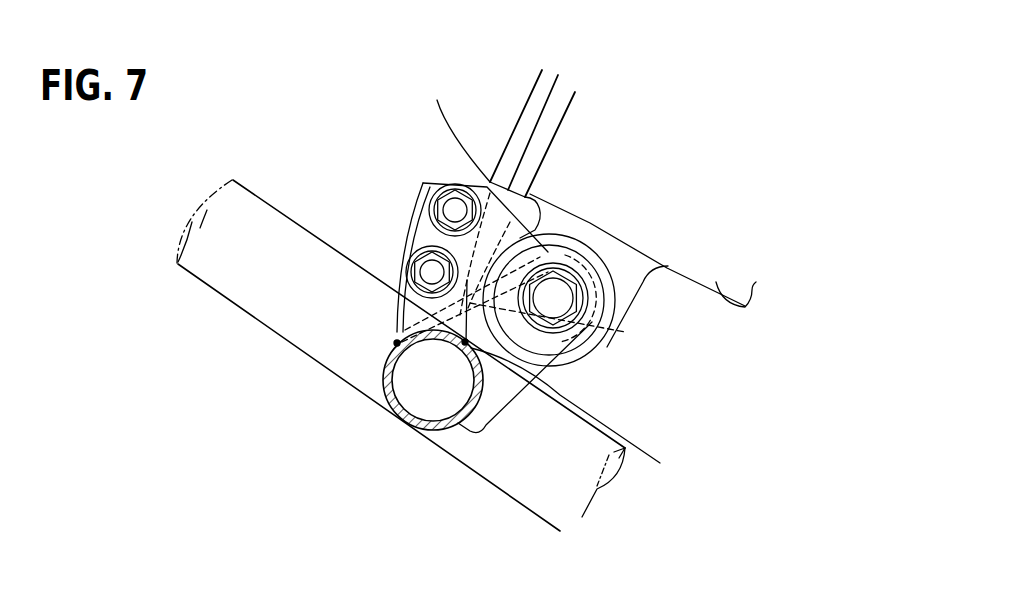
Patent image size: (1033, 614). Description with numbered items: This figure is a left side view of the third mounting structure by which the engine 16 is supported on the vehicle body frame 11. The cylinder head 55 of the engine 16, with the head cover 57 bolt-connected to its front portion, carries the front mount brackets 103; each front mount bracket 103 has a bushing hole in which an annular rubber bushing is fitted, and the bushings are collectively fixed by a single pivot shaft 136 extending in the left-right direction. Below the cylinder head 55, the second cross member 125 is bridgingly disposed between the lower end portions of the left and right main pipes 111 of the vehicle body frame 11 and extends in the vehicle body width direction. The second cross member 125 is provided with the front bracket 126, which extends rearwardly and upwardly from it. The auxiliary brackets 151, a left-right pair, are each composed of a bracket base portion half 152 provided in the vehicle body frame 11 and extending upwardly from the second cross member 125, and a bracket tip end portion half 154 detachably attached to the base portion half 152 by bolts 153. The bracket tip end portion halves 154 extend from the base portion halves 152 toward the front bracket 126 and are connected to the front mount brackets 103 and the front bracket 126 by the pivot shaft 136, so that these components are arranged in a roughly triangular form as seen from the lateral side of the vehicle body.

The engine 16 is at (493, 60).
The head cover 57 is at (448, 100).
The bolts 153 is at (432, 268).
The auxiliary brackets 151 is at (356, 318).
The bracket tip end portion halves 154 is at (397, 247).
The bracket base portion halves 152 is at (393, 323).
The cylinder head 55 is at (743, 306).
The front mount brackets 103 is at (630, 290).
The pivot shaft 136 is at (598, 340).
The front bracket 126 is at (660, 463).
The second cross member 125 is at (443, 432).
The main pipes 111 is at (528, 503).
The vehicle body frame 11 is at (582, 517).